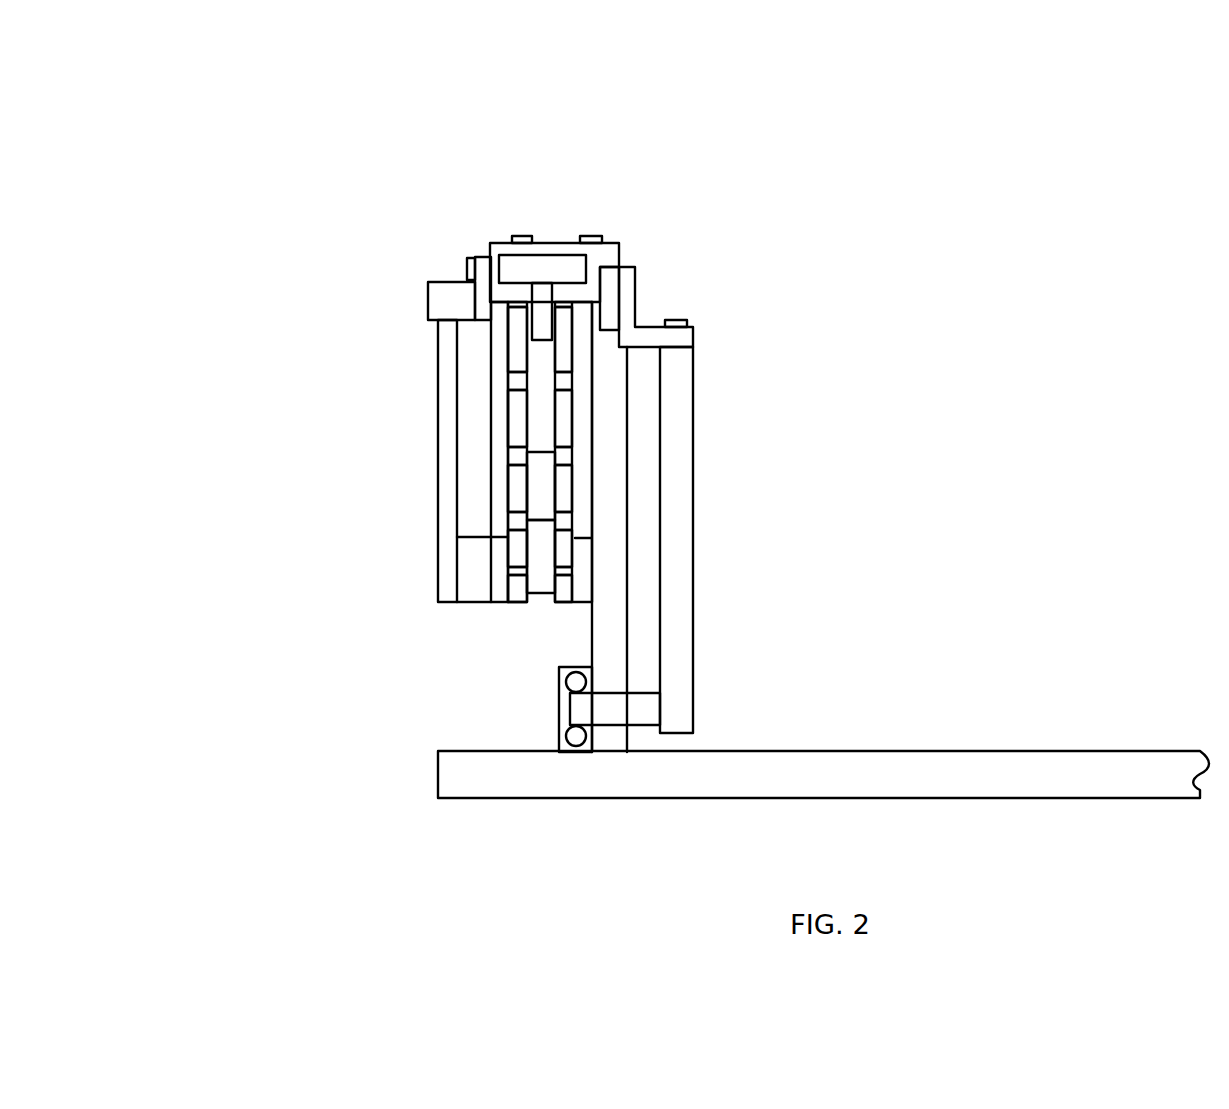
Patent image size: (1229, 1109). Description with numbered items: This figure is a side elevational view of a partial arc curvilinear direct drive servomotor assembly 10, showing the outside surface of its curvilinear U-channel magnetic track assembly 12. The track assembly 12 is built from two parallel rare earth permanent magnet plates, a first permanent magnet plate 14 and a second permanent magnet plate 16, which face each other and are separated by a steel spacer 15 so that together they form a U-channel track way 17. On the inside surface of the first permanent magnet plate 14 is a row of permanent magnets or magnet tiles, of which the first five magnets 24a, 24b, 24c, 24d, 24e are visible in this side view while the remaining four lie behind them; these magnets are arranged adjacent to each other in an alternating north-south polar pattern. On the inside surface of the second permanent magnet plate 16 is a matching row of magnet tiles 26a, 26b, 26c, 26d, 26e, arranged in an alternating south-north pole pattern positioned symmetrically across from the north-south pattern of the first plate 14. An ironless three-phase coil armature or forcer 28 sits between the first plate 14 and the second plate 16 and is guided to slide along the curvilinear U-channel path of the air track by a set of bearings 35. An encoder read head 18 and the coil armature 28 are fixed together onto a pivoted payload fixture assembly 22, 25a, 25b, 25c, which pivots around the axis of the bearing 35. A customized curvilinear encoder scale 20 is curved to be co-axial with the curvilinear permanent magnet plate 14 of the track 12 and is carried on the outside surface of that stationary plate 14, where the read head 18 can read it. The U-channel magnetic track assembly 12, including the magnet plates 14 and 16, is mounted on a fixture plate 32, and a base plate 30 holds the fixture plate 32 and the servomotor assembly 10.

The partial arc curvilinear direct drive servomotor assembly 10 is at (320, 162).
The curvilinear U-channel magnetic track assembly 12 is at (486, 609).
The first permanent magnet plate 14 is at (495, 604).
The steel spacer 15 is at (537, 417).
The second permanent magnet plate 16 is at (577, 604).
The U-channel track way 17 is at (536, 606).
The encoder read head 18 is at (427, 300).
The curvilinear encoder scale 20 is at (438, 450).
The pivoted payload fixture assembly 22 is at (482, 256).
The permanent magnet 24a is at (517, 588).
The permanent magnet 24b is at (517, 552).
The permanent magnet 24c is at (517, 492).
The permanent magnet 24d is at (517, 422).
The permanent magnet 24e is at (517, 343).
The pivoted payload fixture assembly 25a is at (553, 248).
The pivoted payload fixture assembly 25b is at (636, 296).
The pivoted payload fixture assembly 25c is at (681, 368).
The permanent magnet 26a is at (572, 583).
The permanent magnet 26b is at (572, 550).
The permanent magnet 26c is at (572, 491).
The permanent magnet 26d is at (572, 413).
The permanent magnet 26e is at (572, 348).
The ironless three-phase coil armature 28 is at (586, 269).
The base plate 30 is at (1135, 751).
The fixture plate 32 is at (625, 713).
The bearings 35 is at (560, 752).